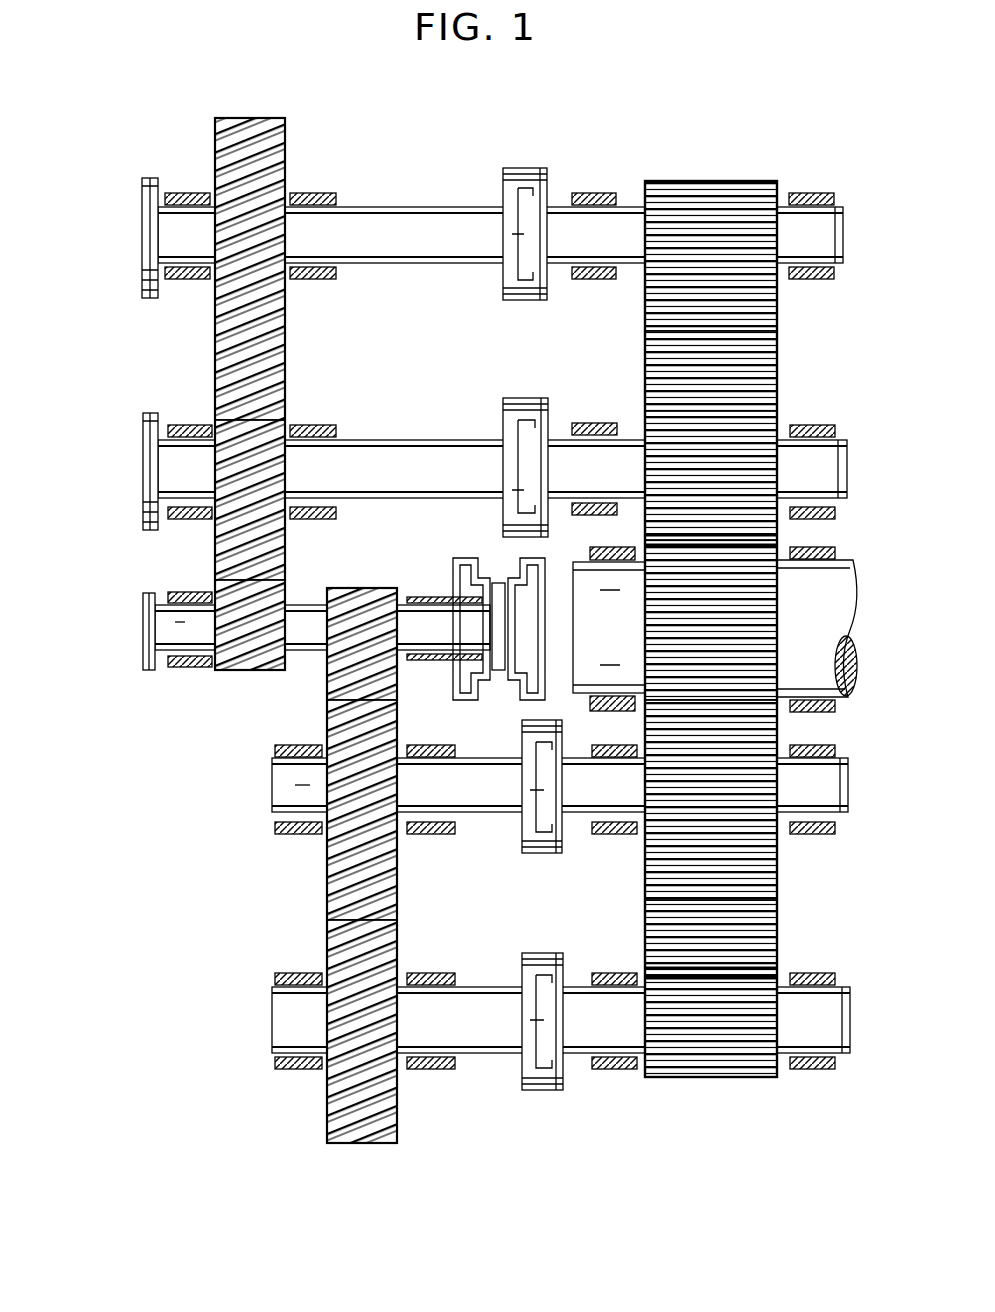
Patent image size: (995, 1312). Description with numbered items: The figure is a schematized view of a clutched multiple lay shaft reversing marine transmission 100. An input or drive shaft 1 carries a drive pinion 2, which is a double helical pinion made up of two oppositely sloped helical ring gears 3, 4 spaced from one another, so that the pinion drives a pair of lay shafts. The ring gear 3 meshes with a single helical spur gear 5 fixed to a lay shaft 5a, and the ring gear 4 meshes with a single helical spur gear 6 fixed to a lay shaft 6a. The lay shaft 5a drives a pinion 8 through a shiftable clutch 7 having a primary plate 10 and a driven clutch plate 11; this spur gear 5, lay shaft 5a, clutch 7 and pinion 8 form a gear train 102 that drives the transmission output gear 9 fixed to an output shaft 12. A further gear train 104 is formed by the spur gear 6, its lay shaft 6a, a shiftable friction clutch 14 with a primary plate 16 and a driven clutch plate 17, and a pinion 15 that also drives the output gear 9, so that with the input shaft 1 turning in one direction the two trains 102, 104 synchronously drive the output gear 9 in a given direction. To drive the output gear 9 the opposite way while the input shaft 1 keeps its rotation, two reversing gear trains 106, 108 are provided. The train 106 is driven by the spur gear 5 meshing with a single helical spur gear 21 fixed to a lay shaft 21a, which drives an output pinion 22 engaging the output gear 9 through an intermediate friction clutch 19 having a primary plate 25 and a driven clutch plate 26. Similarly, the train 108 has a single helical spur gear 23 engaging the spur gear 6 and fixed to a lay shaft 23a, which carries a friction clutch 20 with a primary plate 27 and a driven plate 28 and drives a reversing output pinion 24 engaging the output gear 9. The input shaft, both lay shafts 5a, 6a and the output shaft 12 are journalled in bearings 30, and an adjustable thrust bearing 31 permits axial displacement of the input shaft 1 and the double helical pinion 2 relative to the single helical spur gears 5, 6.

The clutched multiple lay shaft reversing marine transmission 100 is at (128, 545).
The reversing gear train 106 is at (448, 112).
The gear train 102 is at (434, 386).
The gear train 104 is at (466, 862).
The reversing gear train 108 is at (503, 1118).
The input shaft 1 is at (168, 630).
The drive pinion 2 is at (270, 703).
The helical ring gear 3 is at (246, 650).
The helical ring gear 4 is at (350, 606).
The single helical spur gear 5 is at (282, 522).
The lay shaft 5a is at (414, 452).
The single helical spur gear 6 is at (346, 820).
The lay shaft 6a is at (490, 775).
The shiftable clutch 7 is at (528, 398).
The pinion 8 is at (736, 455).
The transmission output gear 9 is at (762, 346).
The primary plate 10 is at (512, 420).
The driven clutch plate 11 is at (535, 420).
The output shaft 12 is at (852, 614).
The shiftable friction clutch 14 is at (542, 853).
The pinion 15 is at (742, 804).
The primary plate 16 is at (522, 835).
The driven clutch plate 17 is at (545, 818).
The friction clutch 19 is at (530, 168).
The friction clutch 20 is at (542, 1090).
The single helical spur gear 21 is at (258, 166).
The lay shaft 21a is at (414, 220).
The output pinion 22 is at (712, 196).
The single helical spur gear 23 is at (360, 1120).
The lay shaft 23a is at (490, 998).
The reversing output pinion 24 is at (706, 1042).
The primary plate 25 is at (515, 200).
The driven clutch plate 26 is at (540, 184).
The primary plate 27 is at (526, 1070).
The driven plate 28 is at (548, 1055).
The bearings 30 is at (181, 192).
The adjustable thrust bearing 31 is at (466, 560).